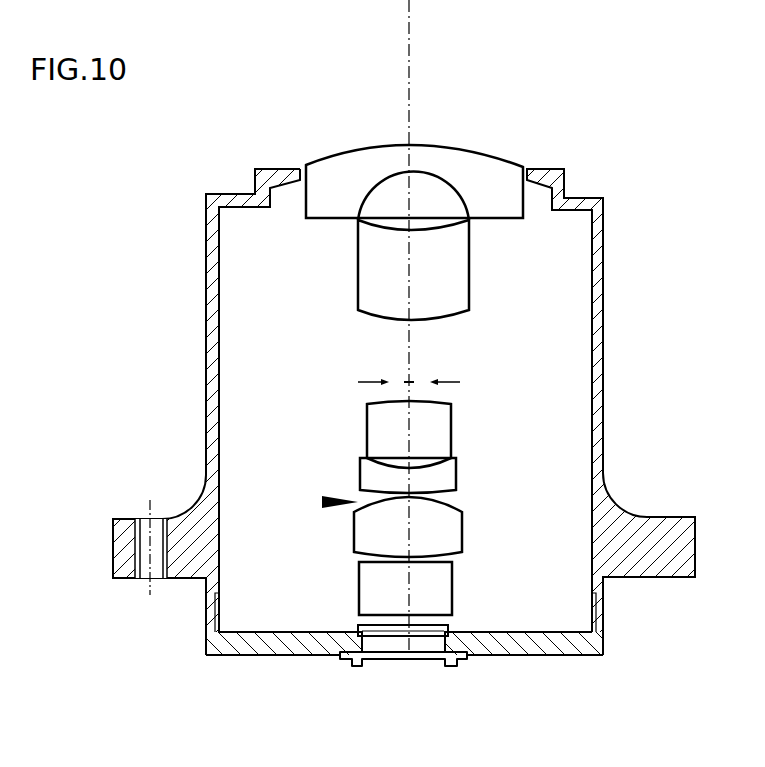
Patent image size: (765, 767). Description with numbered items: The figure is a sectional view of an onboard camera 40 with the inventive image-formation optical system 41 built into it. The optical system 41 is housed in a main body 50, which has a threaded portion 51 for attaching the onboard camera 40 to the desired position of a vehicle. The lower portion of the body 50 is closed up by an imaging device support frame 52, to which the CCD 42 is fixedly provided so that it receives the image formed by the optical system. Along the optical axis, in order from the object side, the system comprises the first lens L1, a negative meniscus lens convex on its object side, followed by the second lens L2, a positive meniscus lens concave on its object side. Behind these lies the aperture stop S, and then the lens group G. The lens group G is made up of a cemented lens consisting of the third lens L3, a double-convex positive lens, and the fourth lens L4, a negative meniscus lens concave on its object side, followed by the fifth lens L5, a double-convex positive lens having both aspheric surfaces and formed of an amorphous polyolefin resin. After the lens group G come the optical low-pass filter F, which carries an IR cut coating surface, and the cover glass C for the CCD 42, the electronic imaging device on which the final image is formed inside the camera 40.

The onboard camera 40 is at (606, 158).
The image-formation optical system 41 is at (295, 310).
The CCD 42 is at (418, 659).
The main body 50 is at (603, 338).
The threaded portion 51 is at (150, 503).
The imaging device support frame 52 is at (603, 642).
The first lens L1 is at (510, 205).
The second lens L2 is at (442, 303).
The third lens L3 is at (432, 435).
The fourth lens L4 is at (447, 477).
The fifth lens L5 is at (370, 537).
The aperture stop S is at (375, 385).
The lens group G is at (322, 502).
The optical low-pass filter F is at (370, 592).
The cover glass C is at (448, 627).